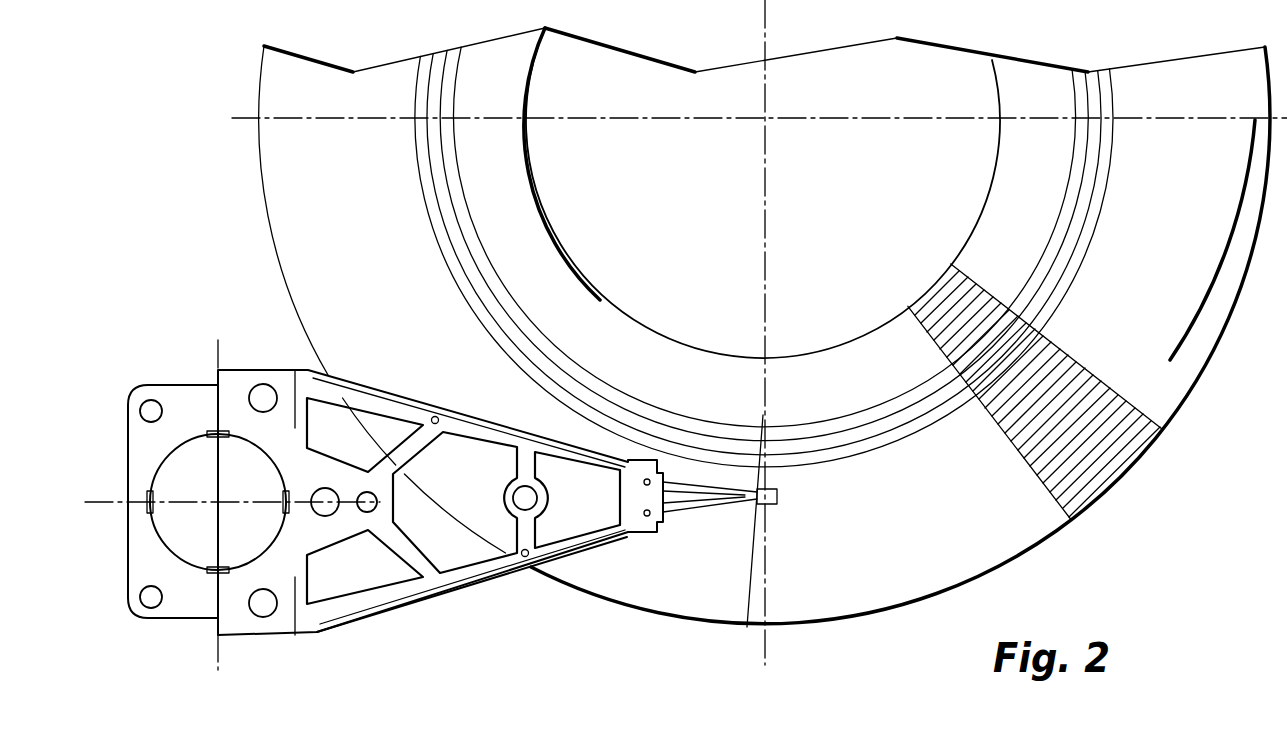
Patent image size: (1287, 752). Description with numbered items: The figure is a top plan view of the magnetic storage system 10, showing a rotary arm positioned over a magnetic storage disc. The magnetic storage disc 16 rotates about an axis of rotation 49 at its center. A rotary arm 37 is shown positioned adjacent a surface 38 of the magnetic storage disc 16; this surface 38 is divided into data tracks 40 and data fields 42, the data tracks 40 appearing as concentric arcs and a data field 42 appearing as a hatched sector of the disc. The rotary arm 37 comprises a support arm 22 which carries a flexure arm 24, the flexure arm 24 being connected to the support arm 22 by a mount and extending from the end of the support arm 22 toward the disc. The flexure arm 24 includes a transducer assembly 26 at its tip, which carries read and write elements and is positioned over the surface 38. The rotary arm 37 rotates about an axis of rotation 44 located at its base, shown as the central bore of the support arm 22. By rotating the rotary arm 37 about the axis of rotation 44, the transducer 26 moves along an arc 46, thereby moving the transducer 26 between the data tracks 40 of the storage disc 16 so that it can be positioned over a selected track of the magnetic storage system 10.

The disc drive 10 is at (145, 166).
The magnetic storage disc 16 is at (262, 236).
The support arm 22 is at (374, 508).
The flexure arm 24 is at (692, 510).
The transducer assembly 26 is at (768, 504).
The rotary arm 37 is at (343, 632).
The surface 38 is at (1177, 338).
The data tracks 40 is at (830, 453).
The data fields 42 is at (1128, 457).
The axis of rotation 44 is at (218, 502).
The arc 46 is at (760, 591).
The axis of rotation 49 is at (767, 118).